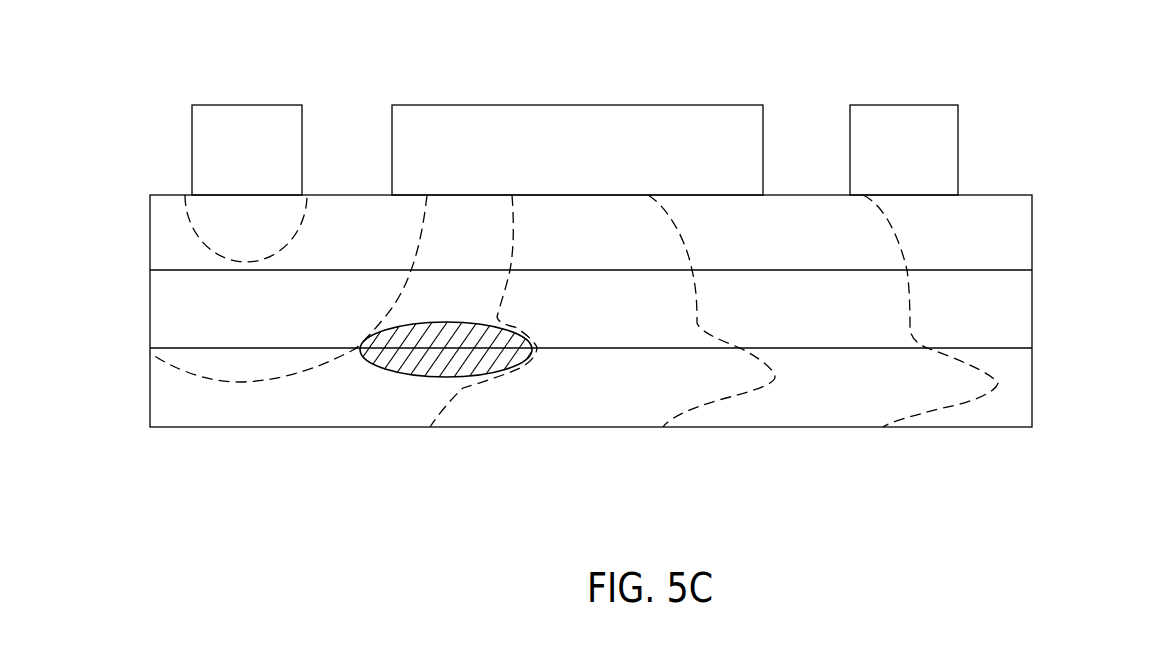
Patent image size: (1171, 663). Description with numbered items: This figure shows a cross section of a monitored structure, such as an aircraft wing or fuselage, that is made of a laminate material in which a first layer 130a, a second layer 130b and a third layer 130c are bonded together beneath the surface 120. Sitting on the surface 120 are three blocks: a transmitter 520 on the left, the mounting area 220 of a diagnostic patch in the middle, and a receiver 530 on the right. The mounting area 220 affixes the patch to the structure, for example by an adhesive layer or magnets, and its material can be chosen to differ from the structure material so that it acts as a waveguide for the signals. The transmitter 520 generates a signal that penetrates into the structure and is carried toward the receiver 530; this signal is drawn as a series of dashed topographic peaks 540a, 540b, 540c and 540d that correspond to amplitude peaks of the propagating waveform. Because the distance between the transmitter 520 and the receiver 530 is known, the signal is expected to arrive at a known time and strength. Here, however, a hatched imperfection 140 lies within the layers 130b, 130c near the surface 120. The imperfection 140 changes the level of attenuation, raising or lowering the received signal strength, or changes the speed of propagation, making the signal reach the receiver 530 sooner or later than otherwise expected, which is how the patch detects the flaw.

The surface 120 is at (990, 195).
The first layer 130a is at (1015, 237).
The second layer 130b is at (1015, 322).
The third layer 130c is at (1015, 410).
The imperfection 140 is at (395, 375).
The mounting area 220 is at (703, 105).
The transmitter 520 is at (192, 143).
The receiver 530 is at (958, 118).
The peak 540a is at (893, 238).
The peak 540b is at (697, 288).
The peak 540c is at (502, 297).
The peak 540d is at (198, 235).